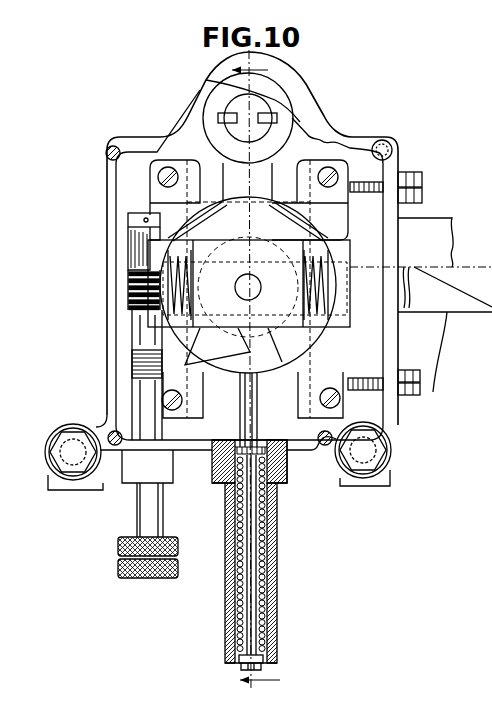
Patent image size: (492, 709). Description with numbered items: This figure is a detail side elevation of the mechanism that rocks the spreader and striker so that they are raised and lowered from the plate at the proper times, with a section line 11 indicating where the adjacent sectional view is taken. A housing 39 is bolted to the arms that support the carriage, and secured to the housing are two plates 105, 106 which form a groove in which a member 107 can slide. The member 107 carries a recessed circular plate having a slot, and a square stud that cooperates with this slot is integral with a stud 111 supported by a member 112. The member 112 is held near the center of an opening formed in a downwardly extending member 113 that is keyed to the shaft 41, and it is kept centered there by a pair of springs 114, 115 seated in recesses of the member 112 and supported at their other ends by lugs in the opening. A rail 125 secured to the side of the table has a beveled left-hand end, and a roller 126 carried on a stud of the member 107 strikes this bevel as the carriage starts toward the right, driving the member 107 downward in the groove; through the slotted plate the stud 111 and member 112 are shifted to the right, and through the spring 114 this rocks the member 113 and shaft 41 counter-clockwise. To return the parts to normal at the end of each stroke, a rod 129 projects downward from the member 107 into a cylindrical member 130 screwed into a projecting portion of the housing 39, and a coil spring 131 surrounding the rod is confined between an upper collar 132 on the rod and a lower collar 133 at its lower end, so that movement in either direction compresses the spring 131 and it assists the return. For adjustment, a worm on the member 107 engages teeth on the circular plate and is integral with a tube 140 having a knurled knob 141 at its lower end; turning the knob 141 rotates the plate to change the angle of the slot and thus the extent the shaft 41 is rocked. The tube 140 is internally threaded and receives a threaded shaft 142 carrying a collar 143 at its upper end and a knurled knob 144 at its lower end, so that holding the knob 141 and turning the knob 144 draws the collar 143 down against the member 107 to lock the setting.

The section line 11 is at (256, 378).
The housing 39 is at (298, 94).
The shaft 41 is at (252, 112).
The plate 105 is at (160, 164).
The plate 106 is at (338, 169).
The member 107 is at (336, 236).
The stud 111 is at (240, 295).
The member 112 is at (258, 318).
The downwardly extending member 113 is at (262, 165).
The spring 114 is at (318, 290).
The spring 115 is at (190, 272).
The rail 125 is at (458, 303).
The roller 126 is at (226, 272).
The rod 129 is at (252, 432).
The cylindrical member 130 is at (276, 543).
The coil spring 131 is at (266, 618).
The collar 132 is at (236, 448).
The collar 133 is at (263, 660).
The tube 140 is at (140, 390).
The knurled knob 141 is at (118, 546).
The shaft 142 is at (138, 378).
The collar 143 is at (144, 214).
The knurled knob 144 is at (118, 568).